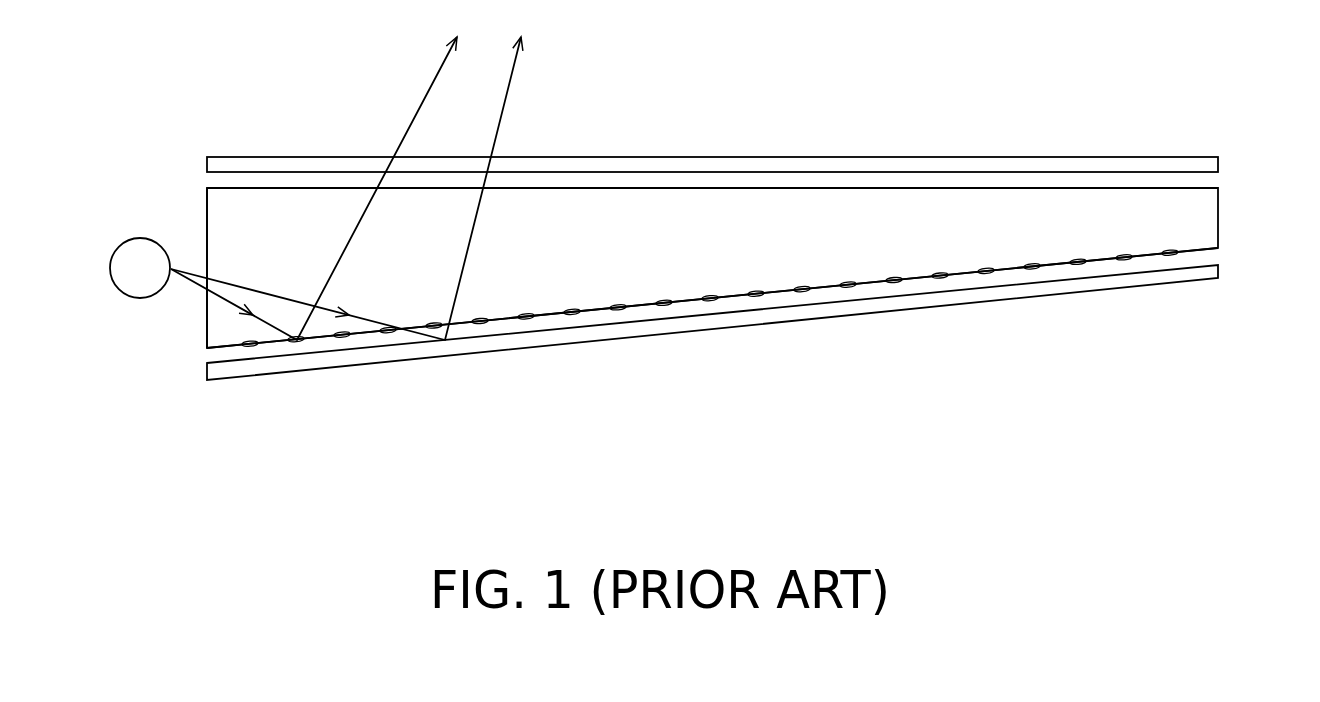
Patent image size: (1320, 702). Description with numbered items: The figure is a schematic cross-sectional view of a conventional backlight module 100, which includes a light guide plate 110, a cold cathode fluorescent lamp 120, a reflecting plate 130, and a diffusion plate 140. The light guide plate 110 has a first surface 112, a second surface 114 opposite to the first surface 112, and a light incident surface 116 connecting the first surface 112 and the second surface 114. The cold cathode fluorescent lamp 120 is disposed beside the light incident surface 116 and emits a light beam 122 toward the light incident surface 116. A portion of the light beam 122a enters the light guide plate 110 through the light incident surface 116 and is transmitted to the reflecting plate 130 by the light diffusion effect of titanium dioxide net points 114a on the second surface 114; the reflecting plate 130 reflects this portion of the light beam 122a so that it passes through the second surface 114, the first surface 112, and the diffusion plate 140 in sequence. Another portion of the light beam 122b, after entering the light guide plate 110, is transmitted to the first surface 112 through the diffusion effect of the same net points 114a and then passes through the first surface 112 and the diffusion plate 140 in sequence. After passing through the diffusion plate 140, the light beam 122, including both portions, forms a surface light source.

The backlight module 100 is at (1283, 387).
The light guide plate 110 is at (1177, 220).
The first surface 112 is at (1178, 188).
The second surface 114 is at (1195, 252).
The titanium dioxide net points 114a is at (525, 325).
The light incident surface 116 is at (207, 312).
The cold cathode fluorescent lamp 120 is at (142, 260).
The light beam 122 is at (408, 188).
The portion of the light beam 122a is at (507, 117).
The portion of the light beam 122b is at (405, 130).
The reflecting plate 130 is at (245, 367).
The diffusion plate 140 is at (233, 163).